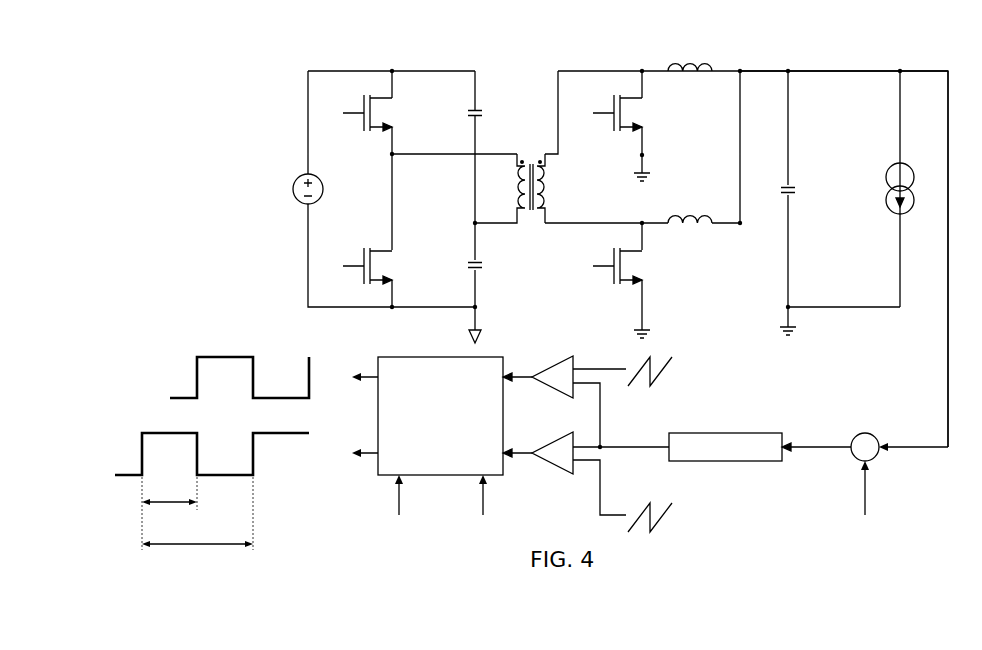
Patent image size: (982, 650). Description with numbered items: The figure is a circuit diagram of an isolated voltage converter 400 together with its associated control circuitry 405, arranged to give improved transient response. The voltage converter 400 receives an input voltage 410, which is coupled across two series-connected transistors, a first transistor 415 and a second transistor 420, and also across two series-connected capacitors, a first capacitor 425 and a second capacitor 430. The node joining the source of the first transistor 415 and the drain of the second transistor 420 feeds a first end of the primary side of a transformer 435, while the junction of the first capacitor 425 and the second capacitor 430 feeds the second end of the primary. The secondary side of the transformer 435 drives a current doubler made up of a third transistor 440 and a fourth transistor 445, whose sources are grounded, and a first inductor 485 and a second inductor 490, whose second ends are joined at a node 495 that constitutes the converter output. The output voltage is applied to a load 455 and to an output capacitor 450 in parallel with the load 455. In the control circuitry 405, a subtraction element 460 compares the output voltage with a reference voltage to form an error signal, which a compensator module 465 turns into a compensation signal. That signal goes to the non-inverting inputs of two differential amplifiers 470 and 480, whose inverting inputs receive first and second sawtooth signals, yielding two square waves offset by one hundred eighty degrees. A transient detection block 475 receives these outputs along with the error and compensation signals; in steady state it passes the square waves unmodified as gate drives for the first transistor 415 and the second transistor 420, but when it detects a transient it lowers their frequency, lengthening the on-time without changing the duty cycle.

The isolated voltage converter 400 is at (217, 76).
The control circuitry 405 is at (296, 344).
The input voltage Vin 410 is at (299, 178).
The transistor Q1 415 is at (361, 110).
The transistor Q2 420 is at (361, 263).
The capacitor C1 425 is at (468, 111).
The capacitor C2 430 is at (468, 264).
The transformer 435 is at (530, 214).
The transistor Q3 440 is at (611, 110).
The transistor Q4 445 is at (611, 263).
The output capacitor 450 is at (797, 191).
The load 455 is at (910, 167).
The subtraction element 460 is at (874, 459).
The compensator module 465 is at (726, 463).
The differential amplifier 470 is at (553, 392).
The transient detection block 475 is at (443, 477).
The differential amplifier 480 is at (553, 469).
The inductor L1 485 is at (705, 66).
The inductor L2 490 is at (705, 219).
The node 495 is at (789, 66).